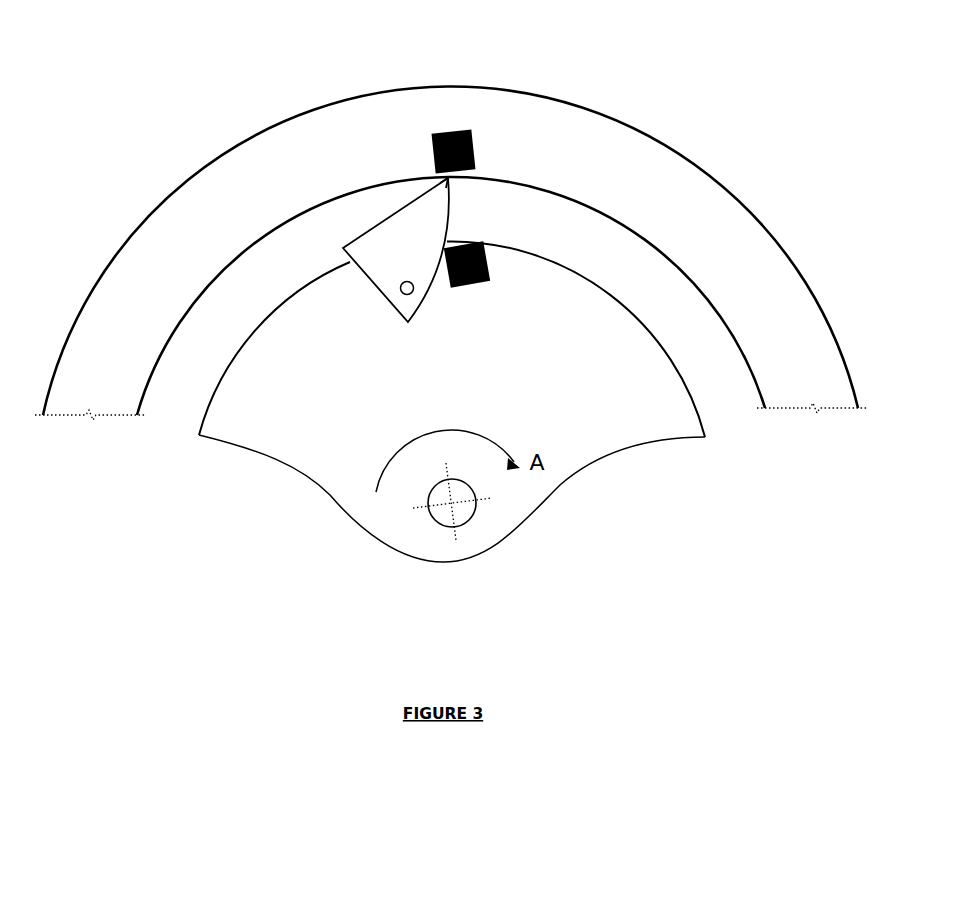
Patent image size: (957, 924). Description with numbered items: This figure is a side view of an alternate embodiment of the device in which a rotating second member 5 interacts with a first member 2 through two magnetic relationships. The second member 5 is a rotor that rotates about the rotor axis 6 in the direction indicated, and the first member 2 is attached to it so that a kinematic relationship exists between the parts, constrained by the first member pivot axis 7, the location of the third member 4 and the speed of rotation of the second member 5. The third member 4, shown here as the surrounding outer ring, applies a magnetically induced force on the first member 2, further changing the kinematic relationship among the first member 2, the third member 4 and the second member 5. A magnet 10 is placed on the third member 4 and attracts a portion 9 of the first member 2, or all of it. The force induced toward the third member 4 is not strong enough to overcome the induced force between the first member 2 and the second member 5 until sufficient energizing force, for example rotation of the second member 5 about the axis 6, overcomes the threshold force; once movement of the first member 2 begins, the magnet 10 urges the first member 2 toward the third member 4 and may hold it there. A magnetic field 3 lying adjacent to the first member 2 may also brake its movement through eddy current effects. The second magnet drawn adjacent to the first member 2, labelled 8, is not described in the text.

The first member 2 is at (392, 234).
The magnetic field 3 is at (618, 262).
The third member 4 is at (627, 167).
The second member 5 is at (340, 484).
The rotor axis 6 is at (466, 507).
The first member pivot axis 7 is at (399, 283).
The second magnet 8 is at (490, 262).
The portion of the first member 9 is at (447, 176).
The magnet 10 is at (455, 130).